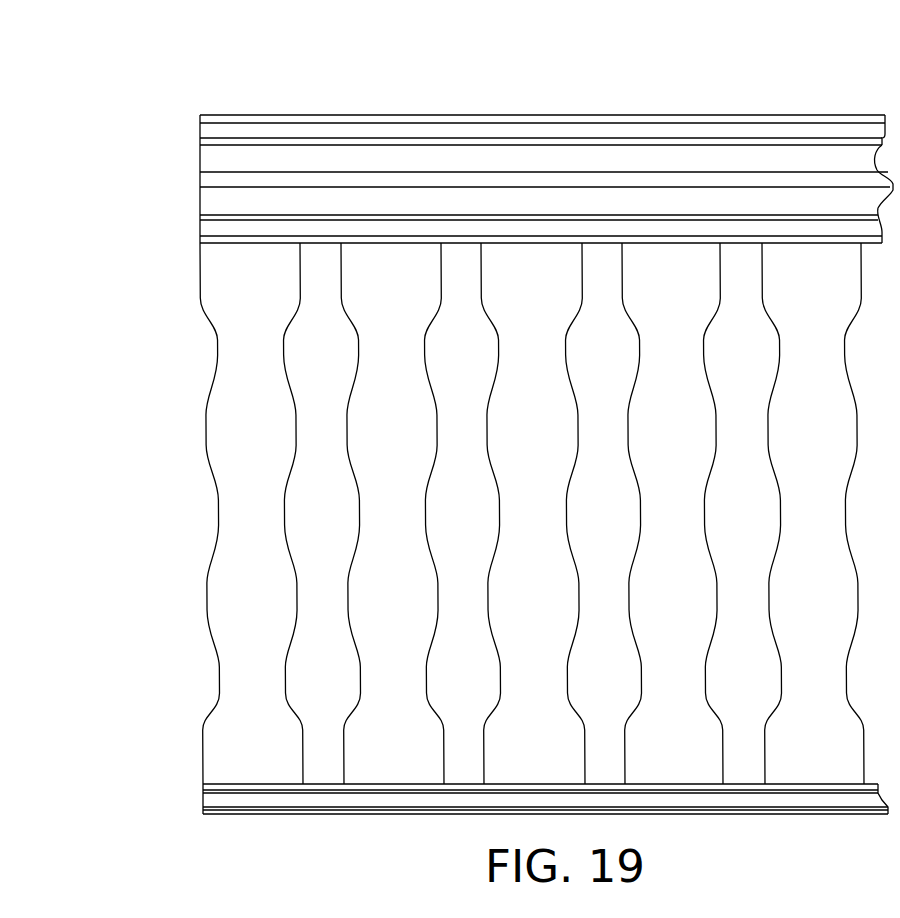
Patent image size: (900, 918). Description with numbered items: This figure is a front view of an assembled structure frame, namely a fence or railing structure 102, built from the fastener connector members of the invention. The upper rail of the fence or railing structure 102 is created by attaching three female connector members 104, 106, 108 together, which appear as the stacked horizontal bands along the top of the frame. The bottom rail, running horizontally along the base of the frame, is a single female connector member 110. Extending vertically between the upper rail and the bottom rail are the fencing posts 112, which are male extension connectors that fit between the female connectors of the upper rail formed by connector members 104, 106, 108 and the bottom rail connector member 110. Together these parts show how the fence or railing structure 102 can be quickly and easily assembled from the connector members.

The fence or railing structure 102 is at (455, 98).
The female connector member 104 is at (213, 130).
The female connector member 106 is at (208, 165).
The female connector member 108 is at (214, 227).
The female connector member 110 is at (212, 802).
The fencing posts 112 is at (230, 438).